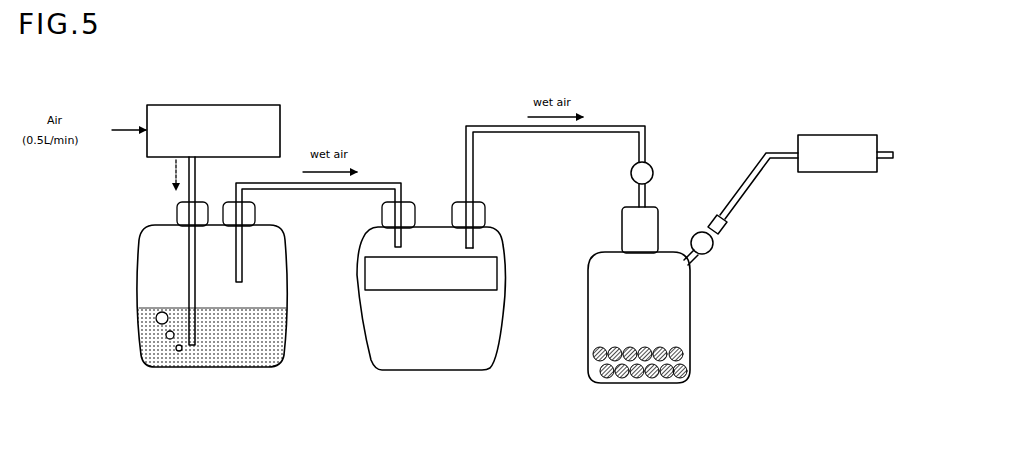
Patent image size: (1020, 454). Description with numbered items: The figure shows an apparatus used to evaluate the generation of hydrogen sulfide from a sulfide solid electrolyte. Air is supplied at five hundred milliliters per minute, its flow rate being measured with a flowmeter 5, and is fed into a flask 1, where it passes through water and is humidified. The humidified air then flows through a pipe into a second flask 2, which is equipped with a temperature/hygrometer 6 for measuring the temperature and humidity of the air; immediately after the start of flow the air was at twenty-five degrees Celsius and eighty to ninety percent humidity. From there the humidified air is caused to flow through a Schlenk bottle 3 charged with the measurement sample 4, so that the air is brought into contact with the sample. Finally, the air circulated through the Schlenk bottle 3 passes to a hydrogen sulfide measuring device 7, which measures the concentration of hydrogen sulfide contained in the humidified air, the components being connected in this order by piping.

The flask 1 is at (263, 361).
The flask 2 is at (482, 355).
The Schlenk bottle 3 is at (677, 337).
The measurement sample 4 is at (663, 380).
The flowmeter 5 is at (235, 113).
The temperature/hygrometer 6 is at (473, 278).
The hydrogen sulfide measuring device 7 is at (823, 165).